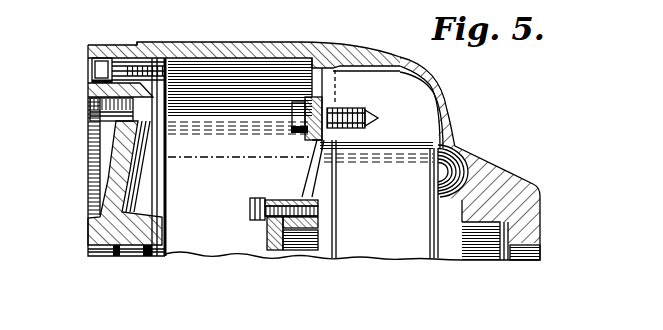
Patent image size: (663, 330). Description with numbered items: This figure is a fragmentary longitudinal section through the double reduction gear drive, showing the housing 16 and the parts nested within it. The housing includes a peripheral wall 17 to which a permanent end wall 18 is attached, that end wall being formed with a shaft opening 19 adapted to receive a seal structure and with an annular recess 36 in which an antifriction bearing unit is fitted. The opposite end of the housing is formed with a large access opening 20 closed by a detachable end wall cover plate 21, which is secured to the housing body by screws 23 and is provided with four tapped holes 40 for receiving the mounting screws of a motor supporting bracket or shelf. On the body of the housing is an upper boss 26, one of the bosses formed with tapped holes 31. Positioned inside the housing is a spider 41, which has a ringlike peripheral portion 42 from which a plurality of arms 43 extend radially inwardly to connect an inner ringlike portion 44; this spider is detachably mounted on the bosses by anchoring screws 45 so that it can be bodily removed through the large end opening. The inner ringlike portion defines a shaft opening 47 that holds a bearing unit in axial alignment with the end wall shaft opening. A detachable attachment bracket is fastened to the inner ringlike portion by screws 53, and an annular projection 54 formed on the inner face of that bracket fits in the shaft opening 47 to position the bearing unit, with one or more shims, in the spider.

The housing 16 is at (234, 42).
The peripheral wall 17 is at (316, 46).
The end wall 18 is at (444, 100).
The shaft opening 19 is at (525, 241).
The access opening 20 is at (168, 80).
The end wall cover plate 21 is at (88, 156).
The screws 23 is at (92, 68).
The upper boss 26 is at (395, 149).
The tapped holes 31 is at (362, 108).
The annular recess 36 is at (474, 233).
The tapped holes 40 is at (88, 111).
The spider 41 is at (303, 143).
The ringlike peripheral portion 42 is at (303, 98).
The arms 43 is at (298, 170).
The inner ringlike portion 44 is at (318, 234).
The anchoring screws 45 is at (297, 129).
The shaft opening 47 is at (313, 252).
The screws 53 is at (250, 212).
The annular projection 54 is at (290, 252).